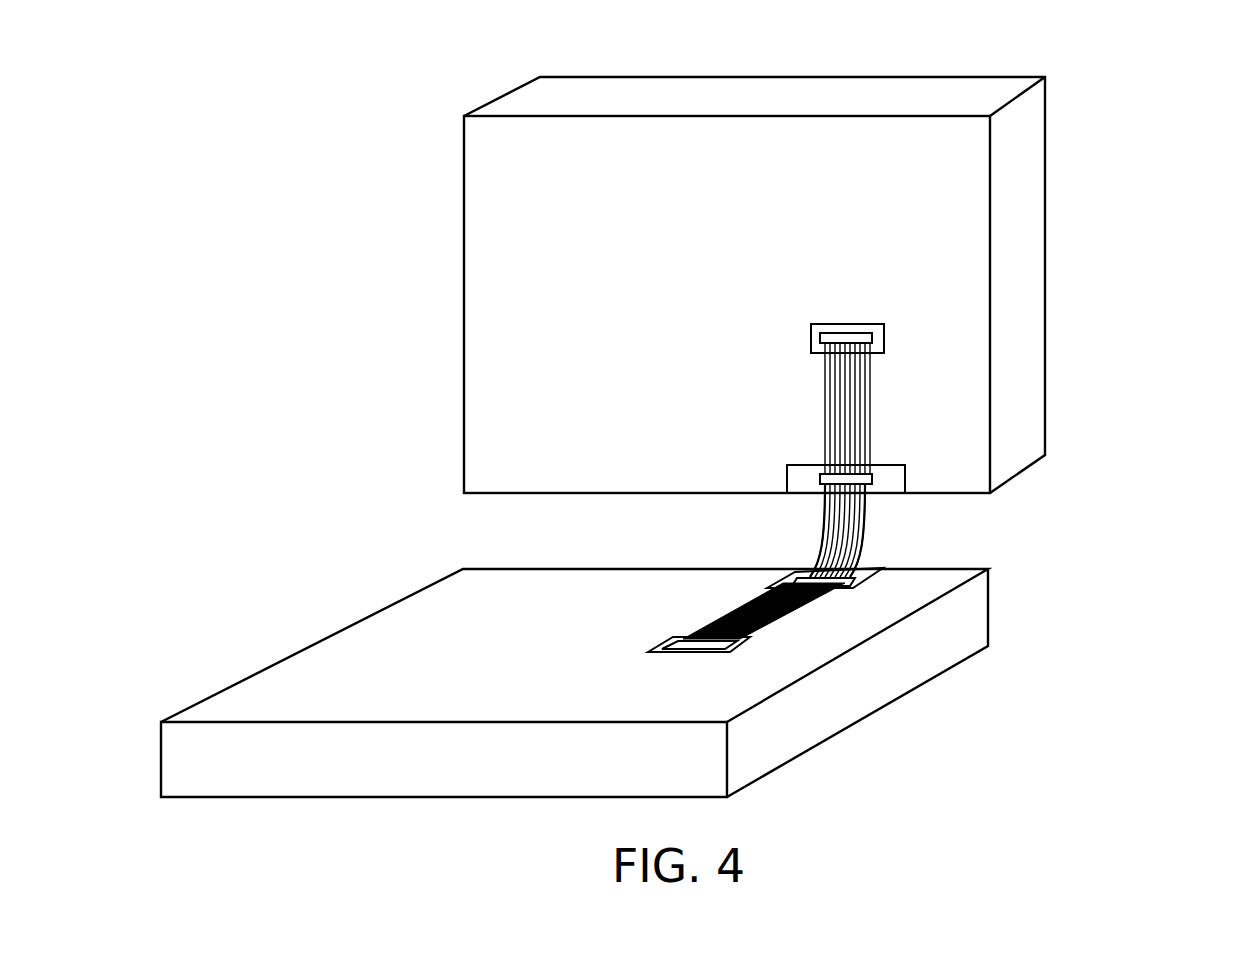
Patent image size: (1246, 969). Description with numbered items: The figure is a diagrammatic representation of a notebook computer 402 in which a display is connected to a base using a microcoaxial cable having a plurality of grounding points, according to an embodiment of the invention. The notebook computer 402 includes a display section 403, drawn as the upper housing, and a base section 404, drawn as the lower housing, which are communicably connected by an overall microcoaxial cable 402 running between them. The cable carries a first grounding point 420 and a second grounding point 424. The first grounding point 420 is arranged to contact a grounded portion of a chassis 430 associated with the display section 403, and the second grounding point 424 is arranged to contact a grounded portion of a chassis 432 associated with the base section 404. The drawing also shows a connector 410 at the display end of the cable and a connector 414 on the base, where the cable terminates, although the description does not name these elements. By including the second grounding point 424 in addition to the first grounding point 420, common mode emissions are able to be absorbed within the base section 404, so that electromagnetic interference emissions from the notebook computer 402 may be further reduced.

The notebook computer 402 is at (1143, 68).
The display section 403 is at (1030, 152).
The base section 404 is at (972, 610).
The first connector 410 is at (872, 337).
The second connector 414 is at (743, 640).
The first grounding point 420 is at (872, 478).
The second grounding point 424 is at (858, 572).
The chassis 430 is at (887, 483).
The chassis 432 is at (805, 570).